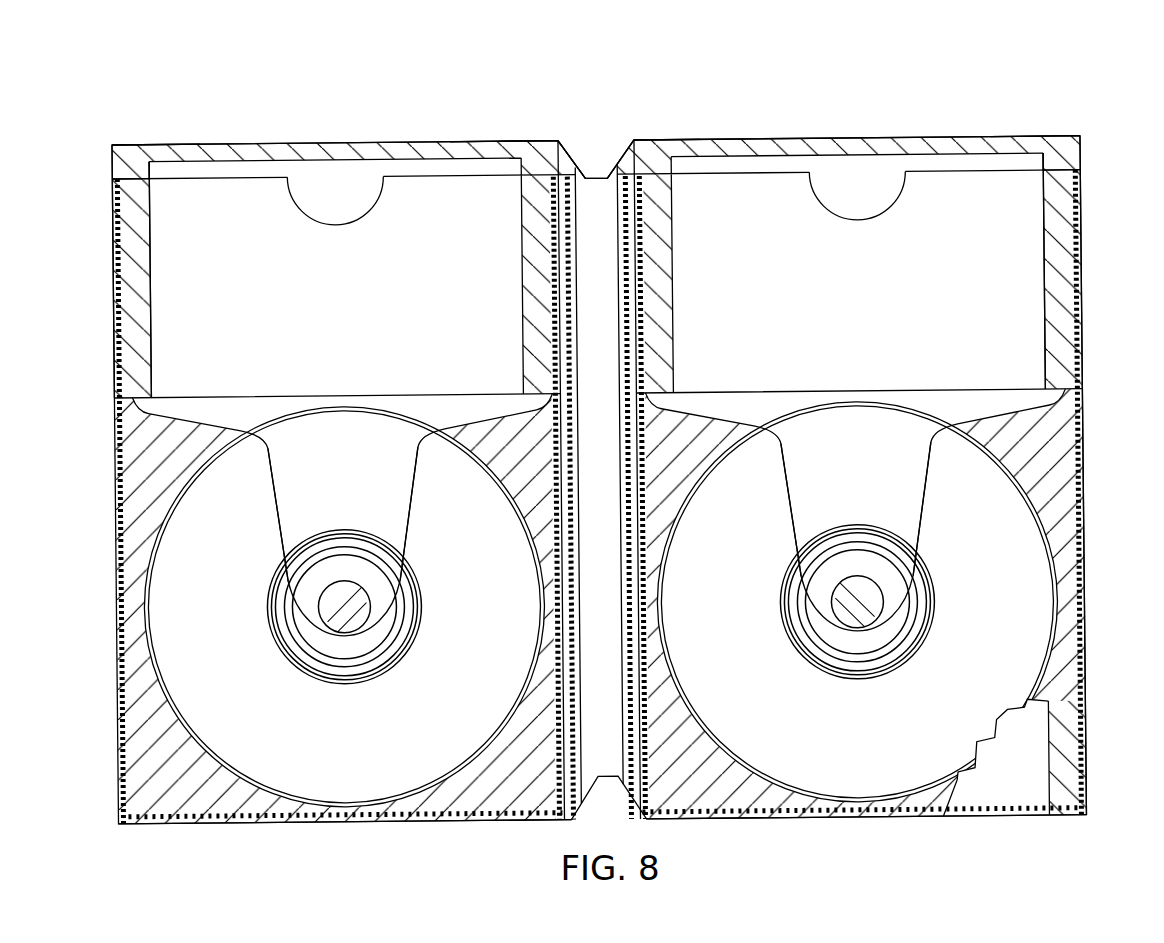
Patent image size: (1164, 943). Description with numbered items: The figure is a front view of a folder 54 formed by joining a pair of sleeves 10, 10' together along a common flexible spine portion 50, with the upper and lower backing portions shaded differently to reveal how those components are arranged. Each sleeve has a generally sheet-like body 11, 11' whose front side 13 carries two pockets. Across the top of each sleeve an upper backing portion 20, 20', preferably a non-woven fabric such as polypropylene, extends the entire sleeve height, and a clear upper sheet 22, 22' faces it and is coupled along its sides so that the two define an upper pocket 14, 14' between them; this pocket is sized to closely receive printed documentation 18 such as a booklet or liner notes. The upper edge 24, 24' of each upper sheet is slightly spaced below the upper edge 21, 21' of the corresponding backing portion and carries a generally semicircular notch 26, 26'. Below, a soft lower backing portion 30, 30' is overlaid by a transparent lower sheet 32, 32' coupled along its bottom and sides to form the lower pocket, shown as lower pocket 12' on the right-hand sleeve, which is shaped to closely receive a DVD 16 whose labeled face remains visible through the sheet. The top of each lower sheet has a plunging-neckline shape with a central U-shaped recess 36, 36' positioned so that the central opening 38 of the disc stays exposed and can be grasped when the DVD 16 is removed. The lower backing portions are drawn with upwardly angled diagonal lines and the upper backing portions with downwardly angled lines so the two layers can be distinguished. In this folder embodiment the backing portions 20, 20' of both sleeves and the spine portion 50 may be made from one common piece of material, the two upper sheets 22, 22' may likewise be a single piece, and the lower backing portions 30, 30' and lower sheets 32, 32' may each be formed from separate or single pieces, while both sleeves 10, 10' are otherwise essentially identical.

The sleeve 10 is at (328, 425).
The sleeve 10' is at (873, 441).
The body 11 is at (156, 139).
The body 11' is at (1035, 131).
The lower pocket 12' is at (1107, 601).
The front side 13 is at (135, 445).
The upper pocket 14 is at (120, 279).
The upper pocket 14' is at (1074, 270).
The DVD 16 is at (282, 479).
The documentation 18 is at (428, 162).
The upper backing portion 20 is at (345, 248).
The upper backing portion 20' is at (877, 272).
The upper edge of upper backing portion 21 is at (536, 134).
The upper edge of upper backing portion 21' is at (657, 134).
The upper sheet 22 is at (335, 135).
The upper sheet 22' is at (857, 131).
The upper edge of upper sheet 24 is at (109, 165).
The upper edge of upper sheet 24' is at (1086, 161).
The semicircular notch 26 is at (335, 197).
The semicircular notch 26' is at (857, 193).
The lower backing portion 30 is at (322, 773).
The lower backing portion 30' is at (891, 719).
The lower sheet 32 is at (318, 793).
The lower sheet 32' is at (890, 740).
The U-shaped recess 36 is at (343, 516).
The U-shaped recess 36' is at (856, 511).
The central opening 38 is at (333, 618).
The spine portion 50 is at (596, 184).
The folder 54 is at (535, 143).